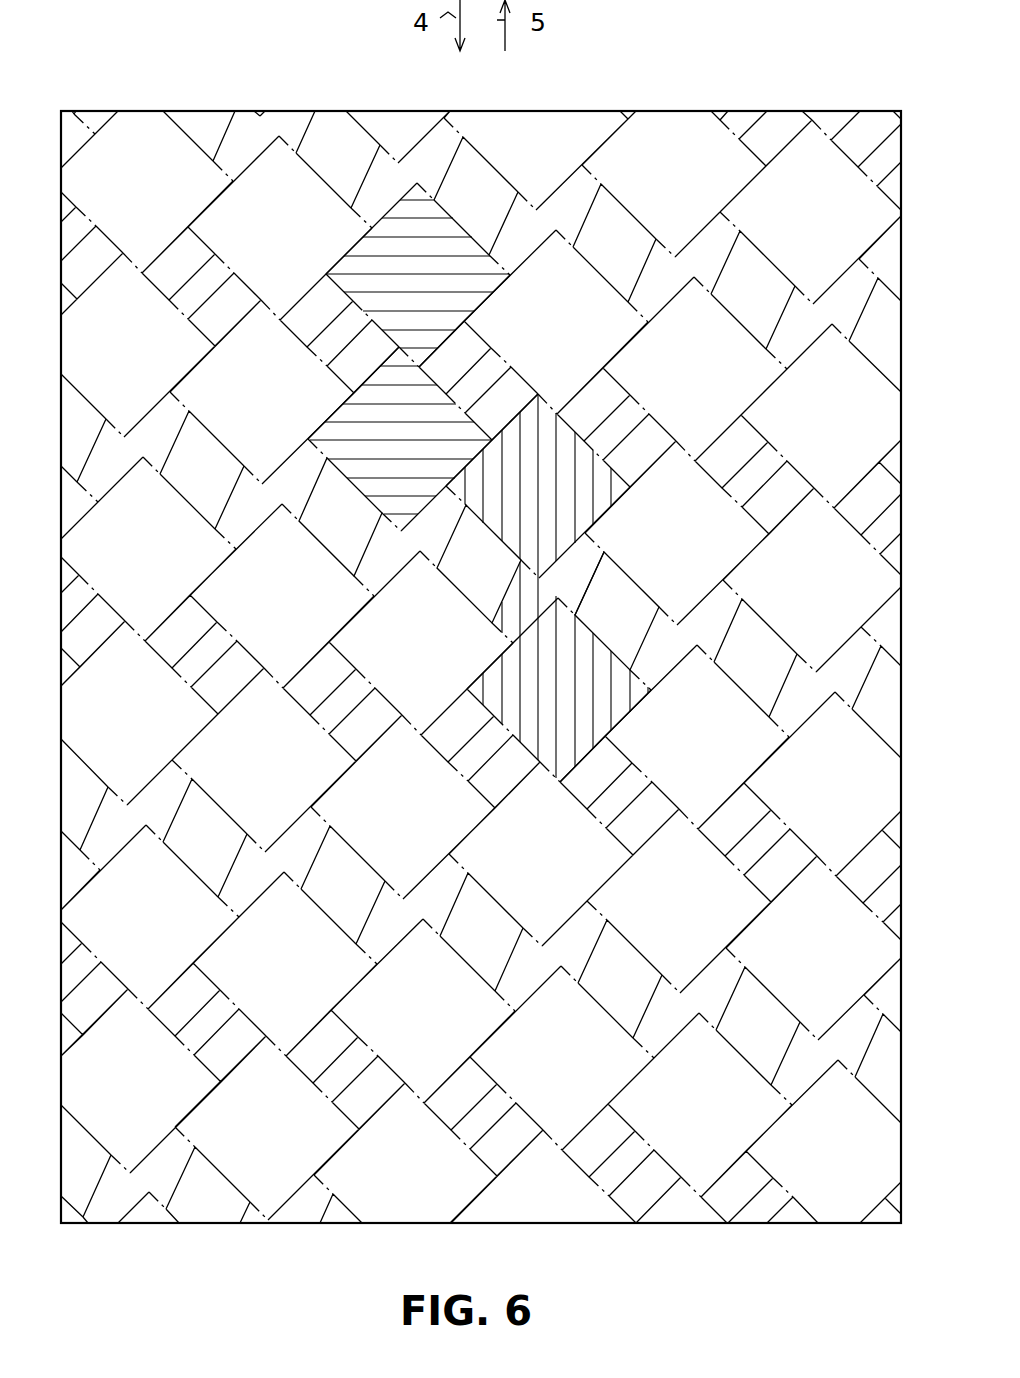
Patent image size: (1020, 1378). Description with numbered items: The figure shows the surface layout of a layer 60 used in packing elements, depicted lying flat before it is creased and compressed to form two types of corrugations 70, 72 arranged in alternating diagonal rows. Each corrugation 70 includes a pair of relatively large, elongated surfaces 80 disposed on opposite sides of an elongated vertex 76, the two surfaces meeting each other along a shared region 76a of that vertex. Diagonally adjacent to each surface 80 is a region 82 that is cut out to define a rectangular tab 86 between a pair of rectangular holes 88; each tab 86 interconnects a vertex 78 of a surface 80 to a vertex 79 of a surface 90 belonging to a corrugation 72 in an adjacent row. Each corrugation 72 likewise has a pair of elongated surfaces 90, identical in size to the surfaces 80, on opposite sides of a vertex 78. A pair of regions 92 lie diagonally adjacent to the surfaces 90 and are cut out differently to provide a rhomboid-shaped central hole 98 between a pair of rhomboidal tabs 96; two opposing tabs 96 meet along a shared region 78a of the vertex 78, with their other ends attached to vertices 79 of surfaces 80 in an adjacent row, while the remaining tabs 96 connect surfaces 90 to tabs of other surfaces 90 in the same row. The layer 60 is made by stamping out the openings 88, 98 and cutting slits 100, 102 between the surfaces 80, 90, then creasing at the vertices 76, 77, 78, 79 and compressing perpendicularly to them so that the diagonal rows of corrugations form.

The layer 60 is at (766, 90).
The corrugation 70 is at (571, 335).
The corrugation 72 is at (616, 529).
The elongated vertex 76 is at (336, 268).
The shared region of vertex 76a is at (380, 316).
The vertex 77 is at (526, 372).
The elongated vertex 78 is at (323, 562).
The shared region of vertex 78a is at (578, 596).
The vertex 79 is at (682, 550).
The elongated surface 80 is at (146, 194).
The region 82 is at (516, 346).
The rectangular tab 86 is at (352, 414).
The rectangular hole 88 is at (302, 284).
The elongated surface 90 is at (274, 216).
The region 92 is at (658, 582).
The rhomboidal tab 96 is at (682, 690).
The rhomboid-shaped central hole 98 is at (489, 564).
The slit 100 is at (348, 238).
The slit 102 is at (190, 208).